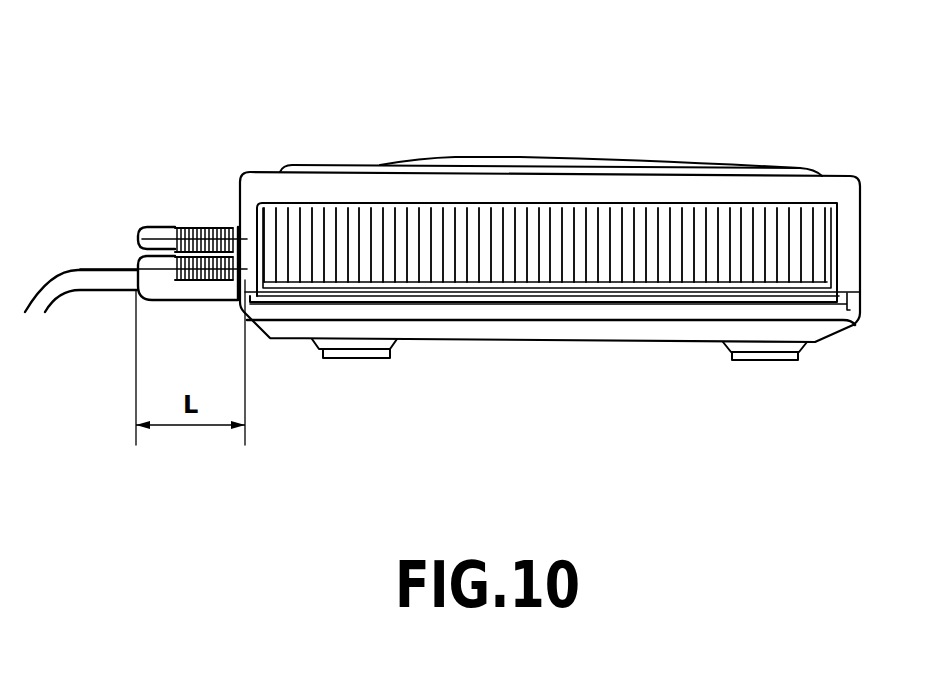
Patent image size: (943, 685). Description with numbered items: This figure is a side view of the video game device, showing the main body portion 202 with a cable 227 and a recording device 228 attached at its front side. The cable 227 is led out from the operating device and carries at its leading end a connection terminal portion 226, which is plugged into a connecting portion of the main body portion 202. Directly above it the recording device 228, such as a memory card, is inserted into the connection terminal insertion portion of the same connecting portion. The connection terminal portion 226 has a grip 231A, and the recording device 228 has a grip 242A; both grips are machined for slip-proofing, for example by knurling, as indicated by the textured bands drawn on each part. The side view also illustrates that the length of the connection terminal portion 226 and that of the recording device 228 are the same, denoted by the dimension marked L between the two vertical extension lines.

The main body portion 202 is at (585, 137).
The connection terminal portion 226 is at (165, 302).
The cable 227 is at (98, 270).
The recording device 228 is at (162, 226).
The grip 242A is at (210, 228).
The grip 231A is at (203, 280).